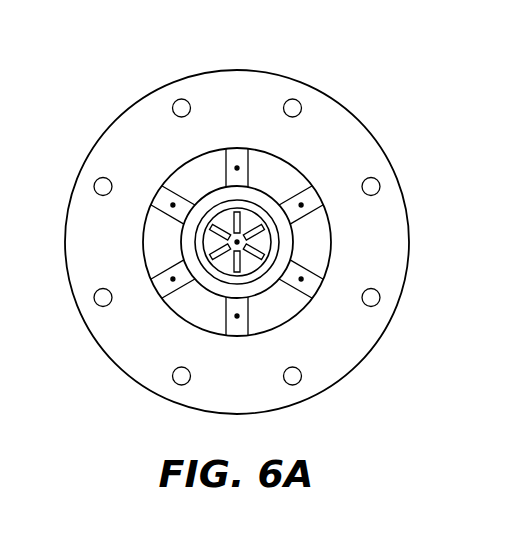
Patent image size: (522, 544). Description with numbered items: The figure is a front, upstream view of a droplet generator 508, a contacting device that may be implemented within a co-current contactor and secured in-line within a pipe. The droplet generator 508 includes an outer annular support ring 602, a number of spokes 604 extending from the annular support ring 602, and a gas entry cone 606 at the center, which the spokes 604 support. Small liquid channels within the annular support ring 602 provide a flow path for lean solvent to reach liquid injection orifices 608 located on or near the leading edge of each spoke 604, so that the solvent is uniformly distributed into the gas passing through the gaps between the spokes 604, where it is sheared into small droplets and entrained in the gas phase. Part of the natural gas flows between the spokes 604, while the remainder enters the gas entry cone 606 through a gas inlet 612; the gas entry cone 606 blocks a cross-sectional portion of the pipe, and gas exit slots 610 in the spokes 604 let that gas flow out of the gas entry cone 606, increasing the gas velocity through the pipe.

The droplet generator 508 is at (136, 50).
The outer annular support ring 602 is at (406, 203).
The spokes 604 is at (227, 168).
The gas entry cone 606 is at (285, 320).
The liquid injection orifices 608 is at (237, 168).
The gas exit slots 610 is at (312, 224).
The gas inlet 612 is at (223, 261).